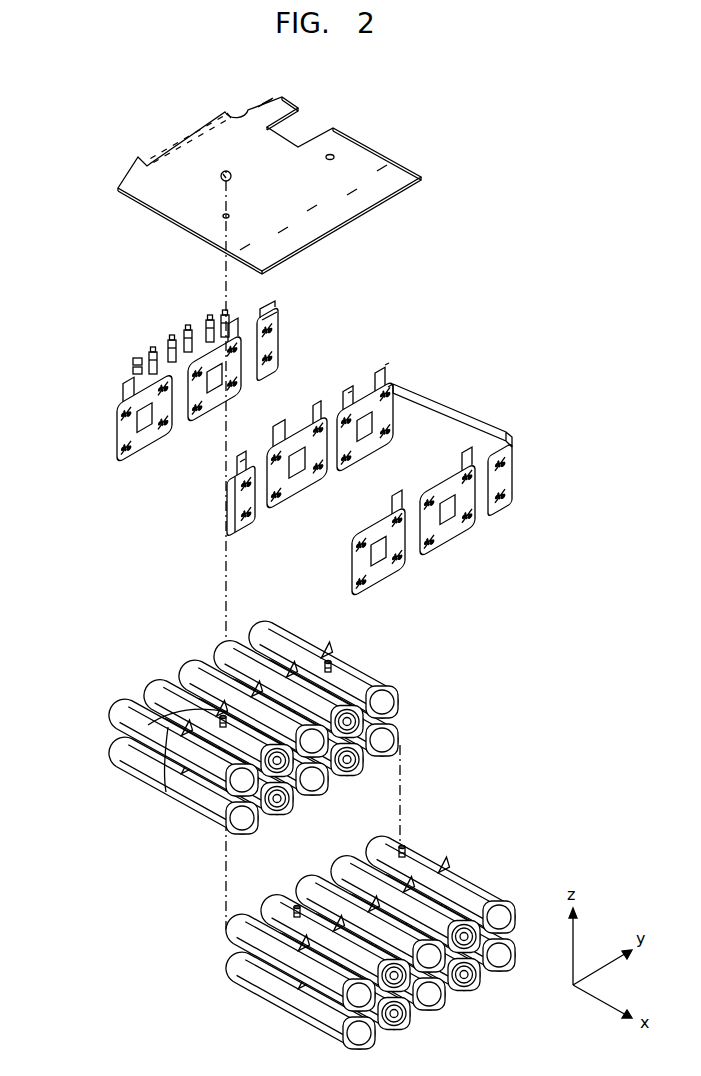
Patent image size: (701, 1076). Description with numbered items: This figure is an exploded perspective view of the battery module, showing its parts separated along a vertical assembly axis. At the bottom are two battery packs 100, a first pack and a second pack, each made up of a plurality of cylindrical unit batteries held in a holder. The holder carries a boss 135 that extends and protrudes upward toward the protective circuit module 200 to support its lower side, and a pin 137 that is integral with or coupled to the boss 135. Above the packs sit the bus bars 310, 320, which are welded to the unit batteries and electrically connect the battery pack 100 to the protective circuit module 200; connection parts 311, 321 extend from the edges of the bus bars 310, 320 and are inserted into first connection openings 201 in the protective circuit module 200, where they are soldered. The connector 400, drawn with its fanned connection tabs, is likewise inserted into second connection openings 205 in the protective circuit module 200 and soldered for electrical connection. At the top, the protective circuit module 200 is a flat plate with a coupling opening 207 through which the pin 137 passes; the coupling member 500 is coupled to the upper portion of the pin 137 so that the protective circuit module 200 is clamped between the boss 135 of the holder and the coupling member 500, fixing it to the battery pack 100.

The battery pack 100 is at (111, 784).
The boss 135 is at (228, 712).
The pin 137 is at (148, 725).
The protective circuit module 200 is at (355, 131).
The first connection opening 201 is at (268, 100).
The second connection opening 205 is at (233, 111).
The coupling opening 207 is at (223, 218).
The bus bar 310 is at (142, 448).
The connection part 311 is at (268, 306).
The bus bar 320 is at (232, 505).
The connection part 321 is at (384, 365).
The connector 400 is at (225, 312).
The coupling member 500 is at (222, 180).